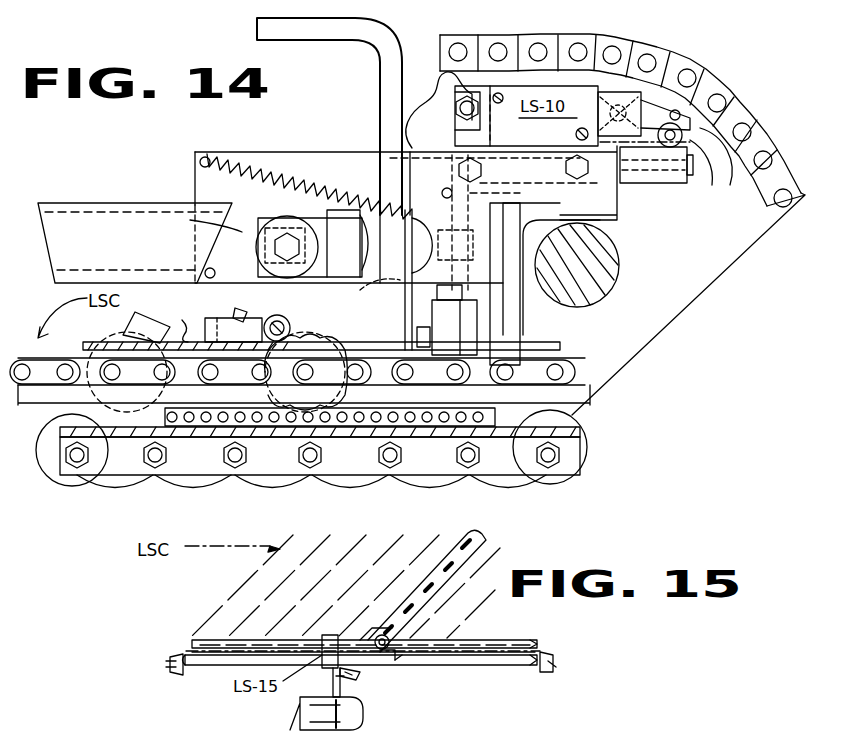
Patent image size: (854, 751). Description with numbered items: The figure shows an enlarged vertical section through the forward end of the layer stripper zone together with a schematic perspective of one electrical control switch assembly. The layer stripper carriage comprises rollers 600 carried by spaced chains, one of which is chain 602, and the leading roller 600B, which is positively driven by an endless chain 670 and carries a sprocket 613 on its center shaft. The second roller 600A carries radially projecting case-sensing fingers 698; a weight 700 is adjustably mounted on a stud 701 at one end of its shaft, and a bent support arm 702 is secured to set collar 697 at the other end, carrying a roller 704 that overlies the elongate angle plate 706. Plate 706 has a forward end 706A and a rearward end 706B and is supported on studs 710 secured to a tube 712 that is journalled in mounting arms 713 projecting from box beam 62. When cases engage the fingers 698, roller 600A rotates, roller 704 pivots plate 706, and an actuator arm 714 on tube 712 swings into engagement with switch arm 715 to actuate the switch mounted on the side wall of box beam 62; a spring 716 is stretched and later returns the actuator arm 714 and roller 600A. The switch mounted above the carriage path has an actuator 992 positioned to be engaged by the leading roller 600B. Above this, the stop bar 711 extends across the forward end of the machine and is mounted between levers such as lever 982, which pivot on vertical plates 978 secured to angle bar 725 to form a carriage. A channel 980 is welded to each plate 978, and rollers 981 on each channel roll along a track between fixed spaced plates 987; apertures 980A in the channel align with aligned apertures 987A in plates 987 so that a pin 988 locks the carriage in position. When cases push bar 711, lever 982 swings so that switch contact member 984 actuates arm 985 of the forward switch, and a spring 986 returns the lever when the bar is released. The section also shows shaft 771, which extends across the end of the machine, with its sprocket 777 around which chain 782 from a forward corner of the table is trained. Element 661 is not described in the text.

In FIG. 14, the pin 988 is at (386, 66).
In FIG. 14, the chain 782 is at (683, 73).
In FIG. 14, the vertical plates 978 is at (462, 133).
In FIG. 14, the lever 982 is at (478, 195).
In FIG. 14, the apertures 980A is at (448, 190).
In FIG. 14, the rollers 981 is at (262, 257).
In FIG. 14, the switch arm 985 is at (655, 133).
In FIG. 14, the switch contact member 984 is at (688, 155).
In FIG. 14, the sprocket 777 is at (722, 237).
In FIG. 14, the shaft 771 is at (596, 258).
In FIG. 14, the angle bar 725 is at (518, 312).
In FIG. 14, the stop bar 711 is at (477, 333).
In FIG. 14, the spring 986 is at (263, 186).
In FIG. 14, the channel 980 is at (328, 232).
In FIG. 14, the aligned apertures 987A is at (386, 181).
In FIG. 14, the fixed spaced plates 987 is at (125, 212).
In FIG. 14, the elongate angle plate 706 is at (321, 330).
In FIG. 15, the elongate angle plate 706 is at (438, 648).
In FIG. 14, the weight 700 is at (123, 325).
In FIG. 14, the roller 704 is at (240, 322).
In FIG. 15, the roller 704 is at (388, 656).
In FIG. 14, the actuator 992 is at (328, 300).
In FIG. 14, the case-sensing fingers 698 is at (238, 310).
In FIG. 15, the case-sensing fingers 698 is at (418, 588).
In FIG. 14, the chain 602 is at (583, 372).
In FIG. 14, the rollers 600 is at (43, 374).
In FIG. 14, the stud 701 is at (136, 374).
In FIG. 14, the bent support arm 702 is at (238, 374).
In FIG. 15, the bent support arm 702 is at (392, 639).
In FIG. 14, the set collar 697 is at (193, 385).
In FIG. 14, the sprocket 613 is at (335, 380).
In FIG. 14, the second roller 600A is at (212, 400).
In FIG. 15, the second roller 600A is at (473, 540).
In FIG. 14, the leading roller 600B is at (283, 425).
In FIG. 14, the bar 661 is at (572, 406).
In FIG. 14, the endless chain 670 is at (438, 420).
In FIG. 15, the rearward end 706B is at (193, 644).
In FIG. 15, the forward end 706A is at (535, 640).
In FIG. 15, the studs 710 is at (243, 657).
In FIG. 15, the mounting arms 713 is at (170, 665).
In FIG. 15, the tube 712 is at (198, 667).
In FIG. 15, the switch arm 715 is at (333, 678).
In FIG. 15, the actuator arm 714 is at (353, 678).
In FIG. 15, the box beam 62 is at (305, 711).
In FIG. 15, the spring 716 is at (334, 712).